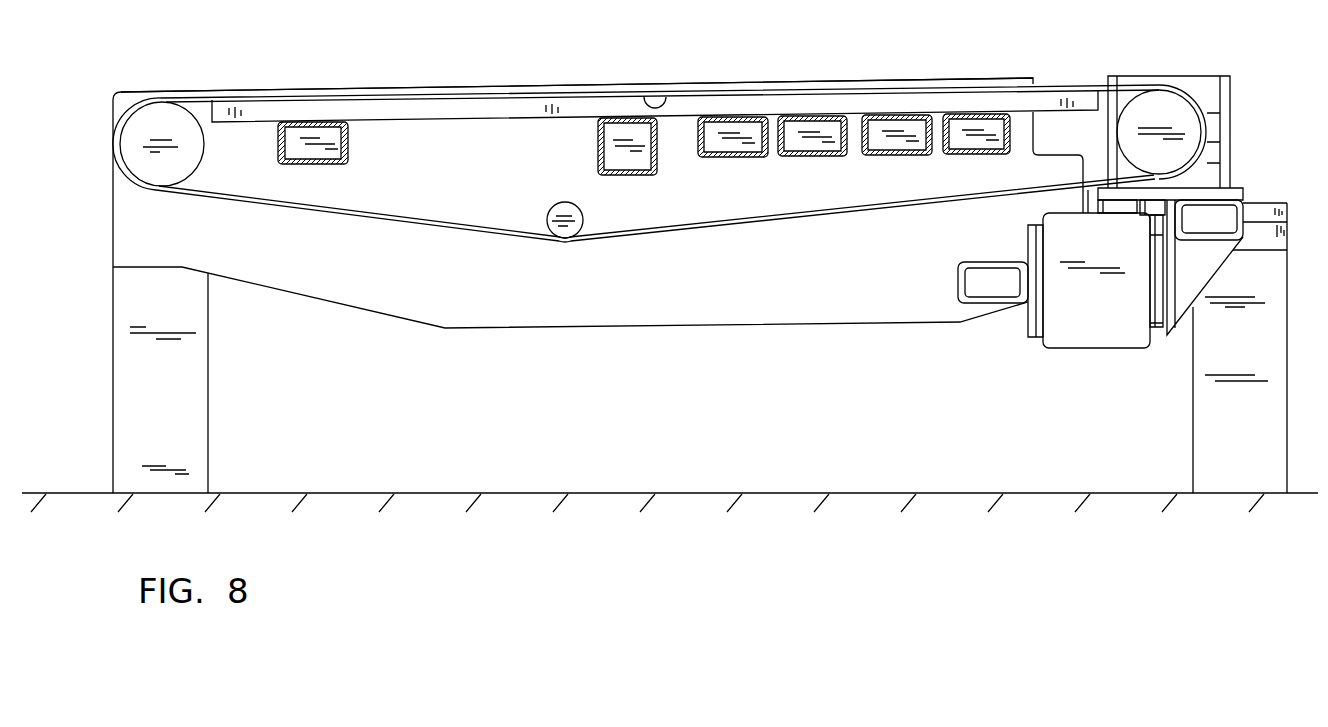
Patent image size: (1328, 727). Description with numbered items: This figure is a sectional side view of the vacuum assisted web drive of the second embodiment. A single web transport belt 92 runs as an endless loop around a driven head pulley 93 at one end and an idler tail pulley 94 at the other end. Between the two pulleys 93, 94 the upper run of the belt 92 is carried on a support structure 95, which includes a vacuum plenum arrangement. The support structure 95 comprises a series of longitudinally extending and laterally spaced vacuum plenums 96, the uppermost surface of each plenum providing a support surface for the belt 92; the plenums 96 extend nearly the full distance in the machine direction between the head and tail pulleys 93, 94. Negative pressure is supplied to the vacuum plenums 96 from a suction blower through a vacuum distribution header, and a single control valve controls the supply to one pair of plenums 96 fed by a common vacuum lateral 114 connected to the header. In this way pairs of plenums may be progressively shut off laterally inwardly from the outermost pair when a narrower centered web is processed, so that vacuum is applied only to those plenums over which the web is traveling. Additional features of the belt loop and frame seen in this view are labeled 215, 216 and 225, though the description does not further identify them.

The web transport belt 92 is at (1067, 87).
The driven head pulley 93 is at (142, 118).
The idler tail pulley 94 is at (1165, 105).
The support structure 95 is at (466, 130).
The vacuum plenums 96 is at (947, 102).
The vacuum lateral 114 is at (723, 158).
The guide plate 215 is at (729, 86).
The sensor 216 is at (647, 92).
The belt return run 225 is at (720, 224).